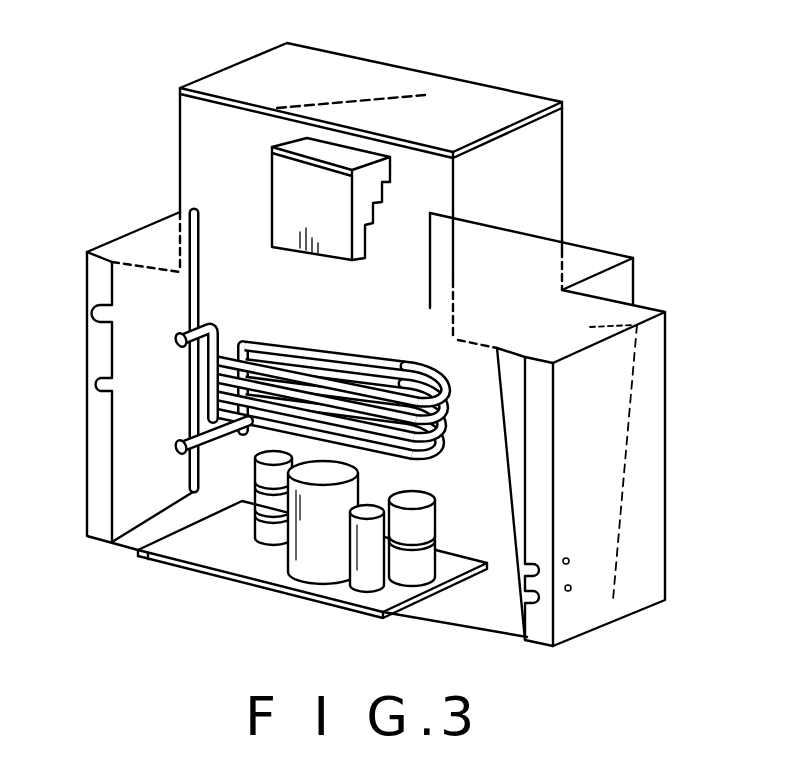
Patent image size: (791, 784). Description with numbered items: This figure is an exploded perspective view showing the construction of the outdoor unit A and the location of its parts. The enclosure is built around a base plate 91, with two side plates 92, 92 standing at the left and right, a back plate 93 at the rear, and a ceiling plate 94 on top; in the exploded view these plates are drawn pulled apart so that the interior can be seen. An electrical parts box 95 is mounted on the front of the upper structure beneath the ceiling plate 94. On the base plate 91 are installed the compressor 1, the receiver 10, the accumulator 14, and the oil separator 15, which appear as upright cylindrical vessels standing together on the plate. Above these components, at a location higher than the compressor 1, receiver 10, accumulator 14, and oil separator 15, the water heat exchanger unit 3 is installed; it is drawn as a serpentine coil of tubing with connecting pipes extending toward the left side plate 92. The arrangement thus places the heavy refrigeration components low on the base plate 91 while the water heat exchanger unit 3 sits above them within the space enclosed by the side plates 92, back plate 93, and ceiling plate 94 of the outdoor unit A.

The outdoor unit A is at (256, 48).
The compressor 1 is at (312, 566).
The water heat exchanger unit 3 is at (432, 357).
The receiver 10 is at (270, 539).
The accumulator 14 is at (425, 497).
The oil separator 15 is at (367, 583).
The base plate 91 is at (143, 560).
The side plates 92 is at (88, 376).
The back plate 93 is at (590, 250).
The ceiling plate 94 is at (490, 98).
The electrical parts box 95 is at (283, 208).